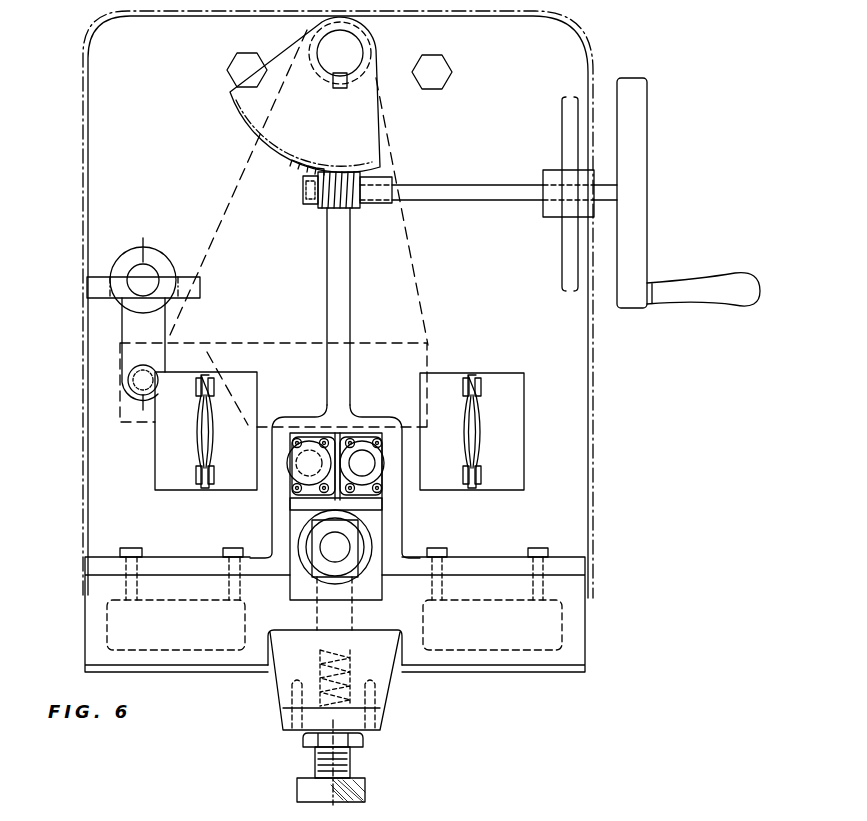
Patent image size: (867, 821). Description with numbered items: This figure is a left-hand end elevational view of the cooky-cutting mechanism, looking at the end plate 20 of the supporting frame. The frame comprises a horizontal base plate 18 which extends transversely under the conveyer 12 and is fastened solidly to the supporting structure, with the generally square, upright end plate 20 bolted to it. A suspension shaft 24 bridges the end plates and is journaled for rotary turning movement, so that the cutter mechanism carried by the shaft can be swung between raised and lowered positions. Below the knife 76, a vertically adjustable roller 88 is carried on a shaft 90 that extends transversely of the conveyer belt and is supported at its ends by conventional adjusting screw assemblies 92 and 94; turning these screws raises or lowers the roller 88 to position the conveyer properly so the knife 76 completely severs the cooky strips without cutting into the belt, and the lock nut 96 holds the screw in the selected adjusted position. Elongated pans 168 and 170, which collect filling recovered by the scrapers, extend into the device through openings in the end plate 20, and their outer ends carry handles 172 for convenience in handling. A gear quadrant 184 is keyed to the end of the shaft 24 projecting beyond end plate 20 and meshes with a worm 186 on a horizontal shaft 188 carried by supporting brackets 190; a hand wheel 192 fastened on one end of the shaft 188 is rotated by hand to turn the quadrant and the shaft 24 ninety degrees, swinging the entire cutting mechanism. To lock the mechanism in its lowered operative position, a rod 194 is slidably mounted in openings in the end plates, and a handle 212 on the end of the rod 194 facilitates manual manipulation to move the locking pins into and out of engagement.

The conveyer 12 is at (172, 247).
The base plate 18 is at (528, 675).
The end plate 20 is at (575, 372).
The suspension shaft 24 is at (356, 52).
The knife 76 is at (338, 463).
The roller 88 is at (368, 535).
The shaft 90 is at (345, 550).
The adjusting screw assembly 92 is at (350, 769).
The adjusting screw assembly 94 is at (335, 680).
The lock nut 96 is at (363, 744).
The pan 168 is at (257, 385).
The pan 170 is at (508, 408).
The handle 172 is at (208, 412).
The gear quadrant 184 is at (365, 128).
The worm 186 is at (318, 200).
The shaft 188 is at (430, 192).
The supporting bracket 190 is at (395, 205).
The hand wheel 192 is at (640, 142).
The rod 194 is at (150, 273).
The handle 212 is at (190, 295).